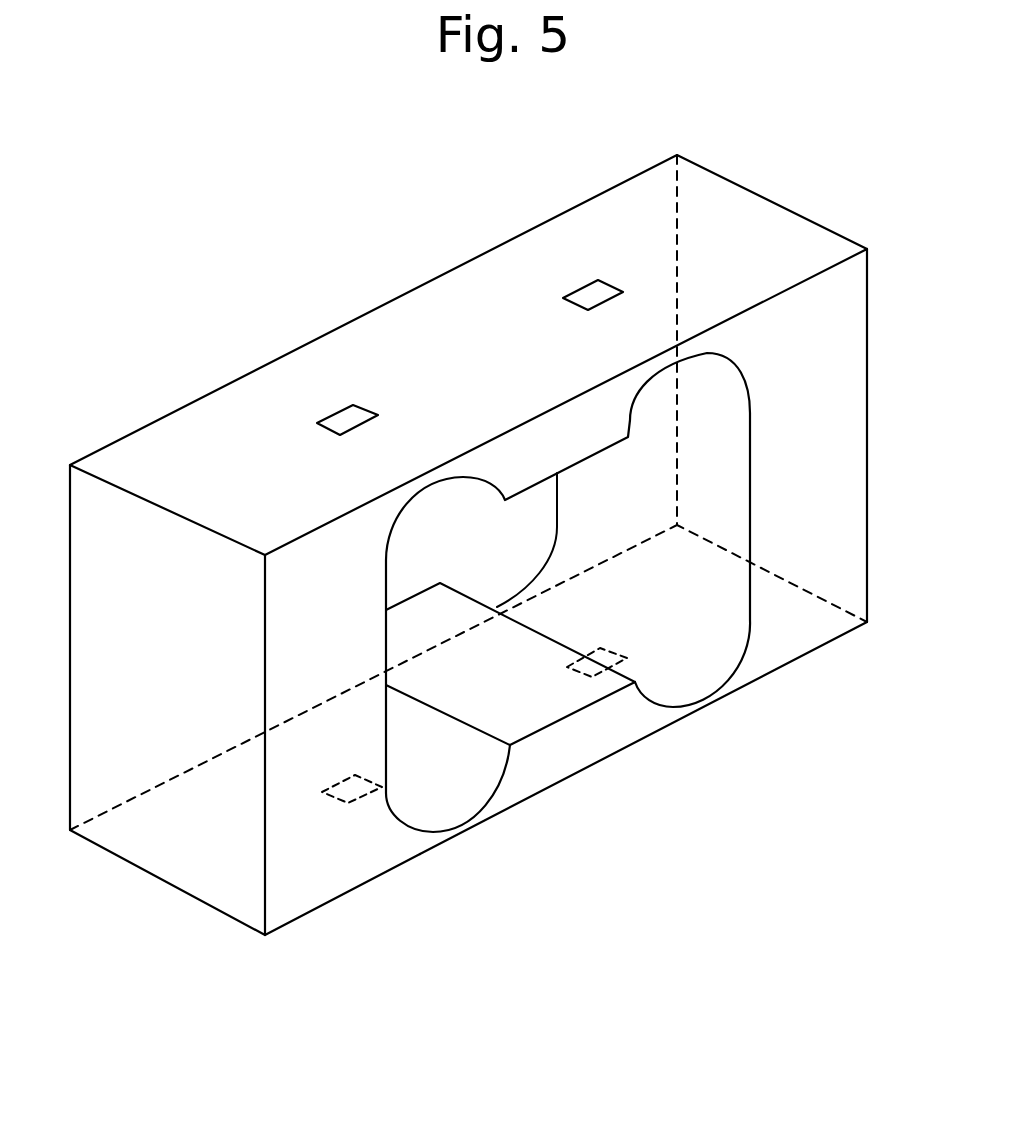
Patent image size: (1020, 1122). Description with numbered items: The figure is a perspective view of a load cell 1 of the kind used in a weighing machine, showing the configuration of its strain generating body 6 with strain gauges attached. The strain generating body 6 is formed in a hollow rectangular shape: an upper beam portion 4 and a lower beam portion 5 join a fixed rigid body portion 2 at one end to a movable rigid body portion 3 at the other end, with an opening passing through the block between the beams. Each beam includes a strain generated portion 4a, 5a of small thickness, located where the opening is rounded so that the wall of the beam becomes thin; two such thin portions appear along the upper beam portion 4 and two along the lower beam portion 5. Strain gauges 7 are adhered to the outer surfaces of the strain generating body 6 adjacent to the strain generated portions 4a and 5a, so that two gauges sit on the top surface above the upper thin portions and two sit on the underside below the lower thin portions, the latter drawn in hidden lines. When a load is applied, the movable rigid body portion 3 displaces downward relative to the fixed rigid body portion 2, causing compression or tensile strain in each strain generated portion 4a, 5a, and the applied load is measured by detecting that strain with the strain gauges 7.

The load cell 1 is at (809, 159).
The fixed rigid body portion 2 is at (325, 853).
The movable rigid body portion 3 is at (812, 618).
The upper beam portion 4 is at (463, 288).
The strain generated portion 4a is at (662, 373).
The lower beam portion 5 is at (567, 765).
The strain generated portion 5a is at (703, 708).
The strain generating body 6 is at (172, 390).
The strain gauge 7 is at (580, 285).